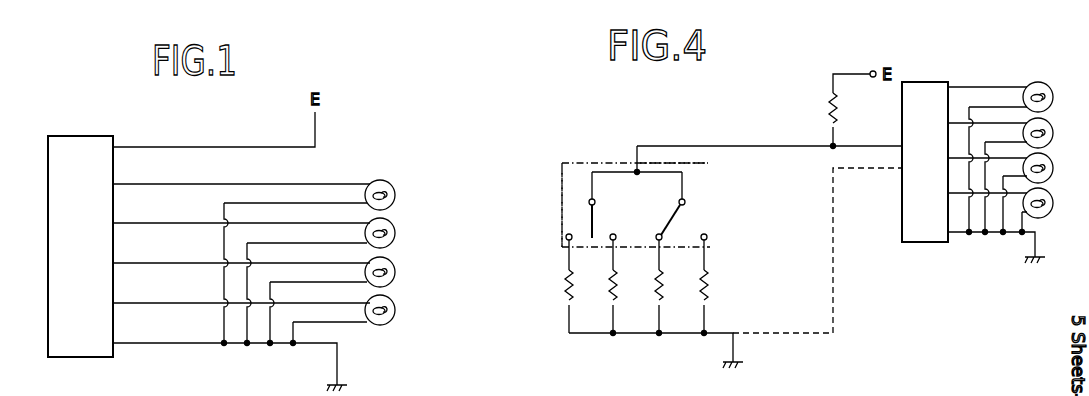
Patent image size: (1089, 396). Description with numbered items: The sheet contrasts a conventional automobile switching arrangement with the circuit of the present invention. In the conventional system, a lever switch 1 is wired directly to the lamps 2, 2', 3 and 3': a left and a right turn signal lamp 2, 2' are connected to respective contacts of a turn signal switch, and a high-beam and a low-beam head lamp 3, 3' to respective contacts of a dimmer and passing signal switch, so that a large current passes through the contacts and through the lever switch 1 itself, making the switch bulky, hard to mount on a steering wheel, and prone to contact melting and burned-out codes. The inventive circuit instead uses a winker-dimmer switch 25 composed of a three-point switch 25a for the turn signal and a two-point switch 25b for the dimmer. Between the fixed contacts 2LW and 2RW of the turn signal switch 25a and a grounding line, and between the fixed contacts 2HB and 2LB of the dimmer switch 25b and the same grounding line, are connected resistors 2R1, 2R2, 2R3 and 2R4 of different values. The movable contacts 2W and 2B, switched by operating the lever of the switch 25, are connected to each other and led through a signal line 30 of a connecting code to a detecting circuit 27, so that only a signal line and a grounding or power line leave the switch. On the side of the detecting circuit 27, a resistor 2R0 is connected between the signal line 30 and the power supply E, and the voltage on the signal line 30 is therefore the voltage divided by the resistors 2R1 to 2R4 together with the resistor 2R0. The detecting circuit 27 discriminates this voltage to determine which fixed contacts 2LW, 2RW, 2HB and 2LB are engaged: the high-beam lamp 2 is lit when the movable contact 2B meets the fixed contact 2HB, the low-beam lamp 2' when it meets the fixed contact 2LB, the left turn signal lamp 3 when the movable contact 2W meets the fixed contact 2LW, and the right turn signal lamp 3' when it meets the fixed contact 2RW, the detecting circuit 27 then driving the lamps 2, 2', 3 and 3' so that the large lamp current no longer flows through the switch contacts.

In FIG. 1, the lever switch 1 is at (77, 134).
In FIG. 1, the high-beam lamp 2 is at (390, 195).
In FIG. 4, the high-beam lamp 2 is at (1048, 97).
In FIG. 1, the low-beam lamp 2' is at (392, 233).
In FIG. 4, the low-beam lamp 2' is at (1050, 133).
In FIG. 1, the left turn signal lamp 3 is at (390, 272).
In FIG. 4, the left turn signal lamp 3 is at (1048, 168).
In FIG. 1, the right turn signal lamp 3' is at (392, 310).
In FIG. 4, the right turn signal lamp 3' is at (1050, 203).
In FIG. 4, the winker-dimmer switch 25 is at (614, 161).
In FIG. 4, the three-point switch 25a is at (570, 181).
In FIG. 4, the two-point switch 25b is at (703, 160).
In FIG. 4, the detecting circuit 27 is at (927, 246).
In FIG. 4, the signal line 30 is at (769, 127).
In FIG. 4, the resistor 2R0 is at (838, 111).
In FIG. 4, the resistor 2R1 is at (566, 282).
In FIG. 4, the resistor 2R2 is at (612, 291).
In FIG. 4, the resistor 2R3 is at (662, 285).
In FIG. 4, the resistor 2R4 is at (708, 296).
In FIG. 4, the movable contact 2W is at (590, 220).
In FIG. 4, the movable contact 2B is at (677, 213).
In FIG. 4, the fixed contact 2HB is at (658, 232).
In FIG. 4, the fixed contact 2RW is at (614, 232).
In FIG. 4, the fixed contact 2LW is at (566, 239).
In FIG. 4, the fixed contact 2LB is at (709, 237).